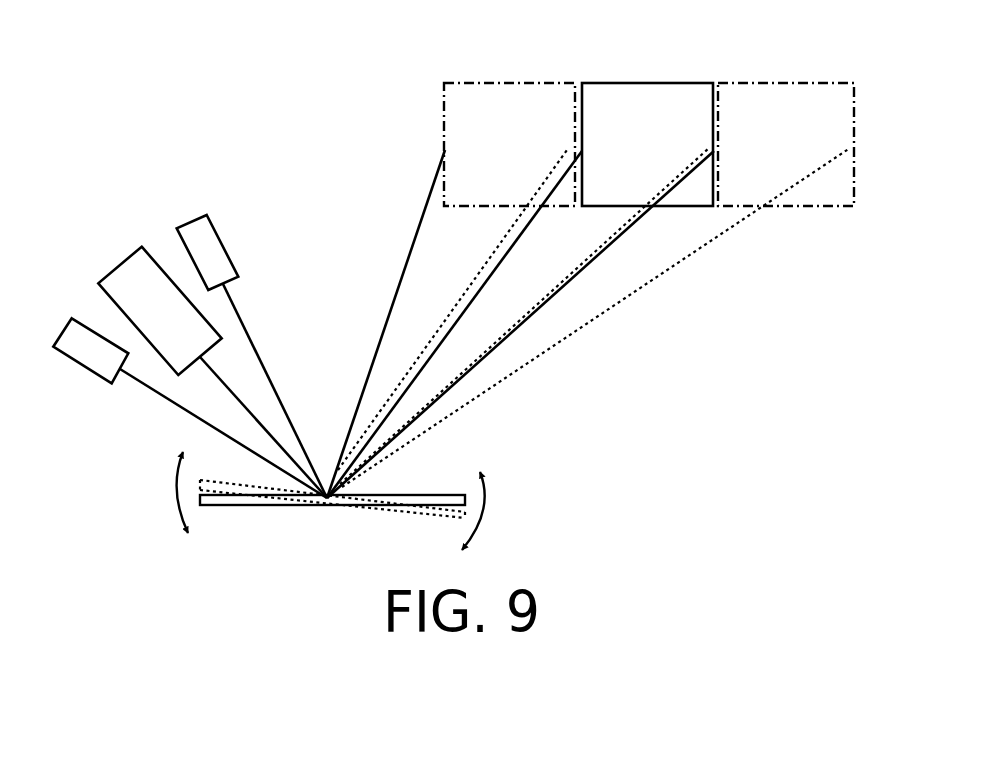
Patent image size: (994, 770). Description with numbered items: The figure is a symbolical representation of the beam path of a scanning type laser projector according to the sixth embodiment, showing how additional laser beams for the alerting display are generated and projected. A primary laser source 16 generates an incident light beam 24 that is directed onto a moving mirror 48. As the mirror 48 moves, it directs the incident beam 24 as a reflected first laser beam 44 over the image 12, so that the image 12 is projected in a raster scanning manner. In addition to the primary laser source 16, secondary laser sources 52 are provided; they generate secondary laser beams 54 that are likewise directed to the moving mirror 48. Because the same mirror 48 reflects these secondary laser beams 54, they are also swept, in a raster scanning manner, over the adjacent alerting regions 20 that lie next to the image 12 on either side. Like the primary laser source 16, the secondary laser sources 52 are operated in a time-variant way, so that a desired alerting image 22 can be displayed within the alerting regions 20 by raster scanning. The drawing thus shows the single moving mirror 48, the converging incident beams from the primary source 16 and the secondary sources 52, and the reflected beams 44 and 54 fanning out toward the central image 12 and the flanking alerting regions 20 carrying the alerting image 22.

The image 12 is at (647, 144).
The primary laser source 16 is at (130, 277).
The adjacent alerting region 20 is at (612, 109).
The alerting image 22 is at (649, 144).
The incident light beam 24 is at (240, 402).
The first laser beam 44 is at (508, 253).
The moving mirror 48 is at (437, 497).
The secondary laser source 52 is at (212, 252).
The secondary laser beam 54 is at (242, 323).